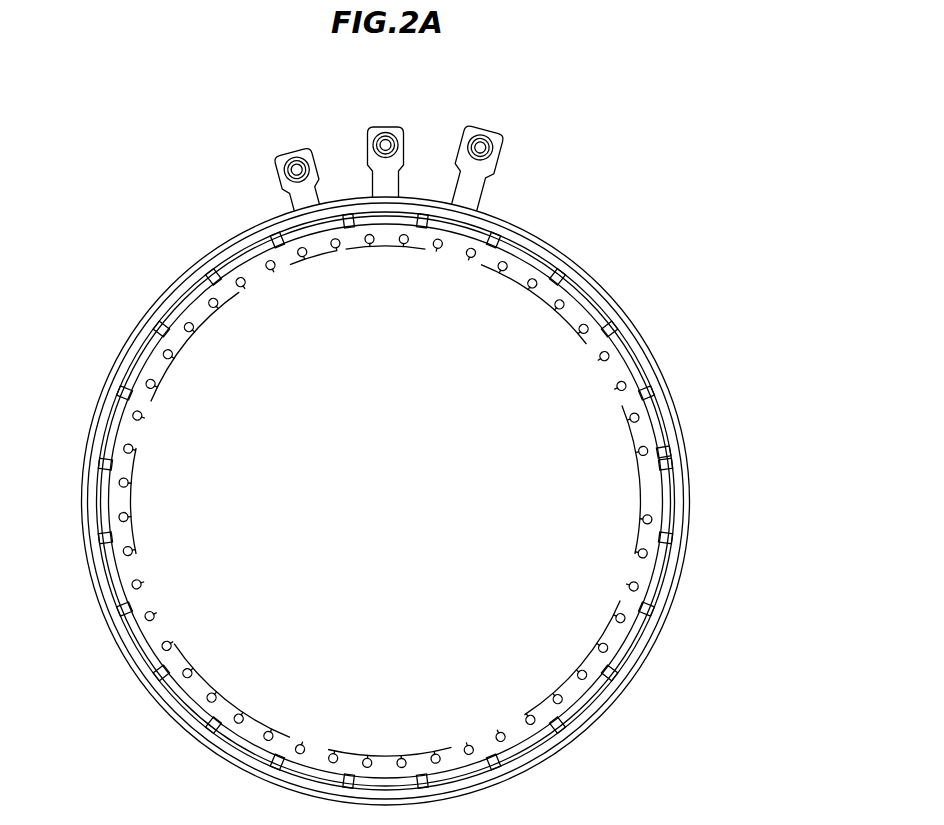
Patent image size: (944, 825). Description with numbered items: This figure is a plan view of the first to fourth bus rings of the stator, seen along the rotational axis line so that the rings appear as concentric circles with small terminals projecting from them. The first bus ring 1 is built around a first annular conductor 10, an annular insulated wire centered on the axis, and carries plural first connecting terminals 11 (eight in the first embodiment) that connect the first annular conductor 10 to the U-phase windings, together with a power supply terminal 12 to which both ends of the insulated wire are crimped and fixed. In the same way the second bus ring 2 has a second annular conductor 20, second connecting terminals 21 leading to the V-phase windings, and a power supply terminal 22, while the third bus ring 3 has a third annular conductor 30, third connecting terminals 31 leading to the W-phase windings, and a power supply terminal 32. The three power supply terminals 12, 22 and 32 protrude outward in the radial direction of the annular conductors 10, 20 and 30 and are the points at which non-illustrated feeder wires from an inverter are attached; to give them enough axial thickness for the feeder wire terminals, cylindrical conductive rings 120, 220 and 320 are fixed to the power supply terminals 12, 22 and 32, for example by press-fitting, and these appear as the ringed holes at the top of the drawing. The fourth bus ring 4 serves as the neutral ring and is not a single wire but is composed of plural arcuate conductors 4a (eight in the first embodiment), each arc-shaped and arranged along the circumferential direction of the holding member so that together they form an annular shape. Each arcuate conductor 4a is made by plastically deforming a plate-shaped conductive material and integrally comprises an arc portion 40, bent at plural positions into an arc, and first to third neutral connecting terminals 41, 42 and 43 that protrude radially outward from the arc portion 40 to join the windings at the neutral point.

The first bus ring 1 is at (449, 218).
The first annular conductor 10 is at (580, 307).
The first connecting terminals 11 is at (590, 323).
The power supply terminal 12 is at (298, 152).
The cylindrical conductive ring 120 is at (300, 152).
The second bus ring 2 is at (523, 314).
The second annular conductor 20 is at (645, 378).
The second connecting terminals 21 is at (625, 378).
The power supply terminal 22 is at (388, 136).
The cylindrical conductive ring 220 is at (383, 130).
The third bus ring 3 is at (610, 271).
The third annular conductor 30 is at (683, 450).
The third connecting terminals 31 is at (645, 448).
The power supply terminal 32 is at (479, 145).
The cylindrical conductive ring 320 is at (473, 132).
The fourth bus ring 4 is at (605, 628).
The arcuate conductor 4a is at (178, 725).
The arc portion 40 is at (230, 705).
The first neutral connecting terminal 41 is at (208, 696).
The second neutral connecting terminal 42 is at (170, 647).
The third neutral connecting terminal 43 is at (250, 732).